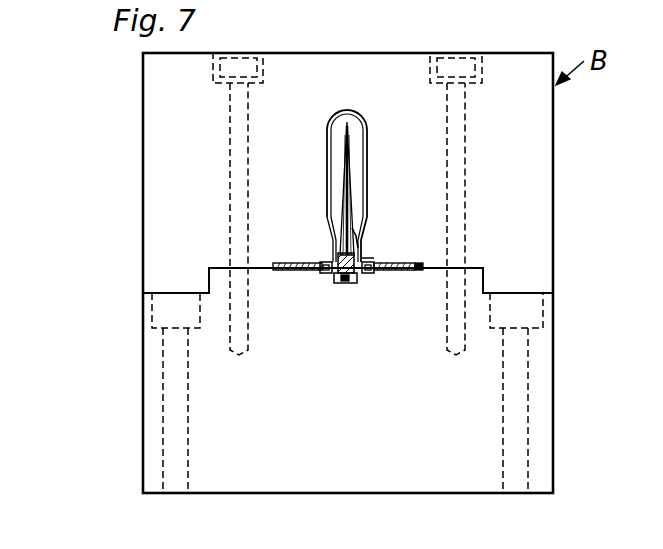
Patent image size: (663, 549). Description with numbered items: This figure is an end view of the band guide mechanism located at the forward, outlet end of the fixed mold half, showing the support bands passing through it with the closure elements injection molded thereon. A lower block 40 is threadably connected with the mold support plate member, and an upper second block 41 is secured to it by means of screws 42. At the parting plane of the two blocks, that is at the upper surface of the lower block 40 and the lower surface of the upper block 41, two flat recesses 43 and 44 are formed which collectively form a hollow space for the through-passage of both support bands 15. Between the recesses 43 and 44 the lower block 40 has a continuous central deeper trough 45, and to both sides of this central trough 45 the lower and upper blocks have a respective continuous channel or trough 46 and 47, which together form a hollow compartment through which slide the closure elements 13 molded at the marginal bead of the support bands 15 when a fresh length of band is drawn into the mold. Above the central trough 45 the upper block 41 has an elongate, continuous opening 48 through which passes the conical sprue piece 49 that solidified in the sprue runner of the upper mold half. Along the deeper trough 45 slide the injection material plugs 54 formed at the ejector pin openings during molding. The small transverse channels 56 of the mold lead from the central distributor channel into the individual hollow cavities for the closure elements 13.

The closure element 13 is at (372, 258).
The support band 15 is at (270, 266).
The block 40 is at (556, 378).
The second block 41 is at (543, 178).
The screws 42 is at (213, 83).
The flat recess 43 is at (290, 263).
The flat recess 44 is at (405, 264).
The central deeper trough 45 is at (348, 284).
The continuous channel or trough 46 is at (322, 262).
The continuous channel or trough 47 is at (368, 274).
The elongate continuous opening 48 is at (367, 135).
The conical sprue piece 49 is at (348, 172).
The injection material plug 54 is at (340, 284).
The transverse channel 56 is at (358, 232).